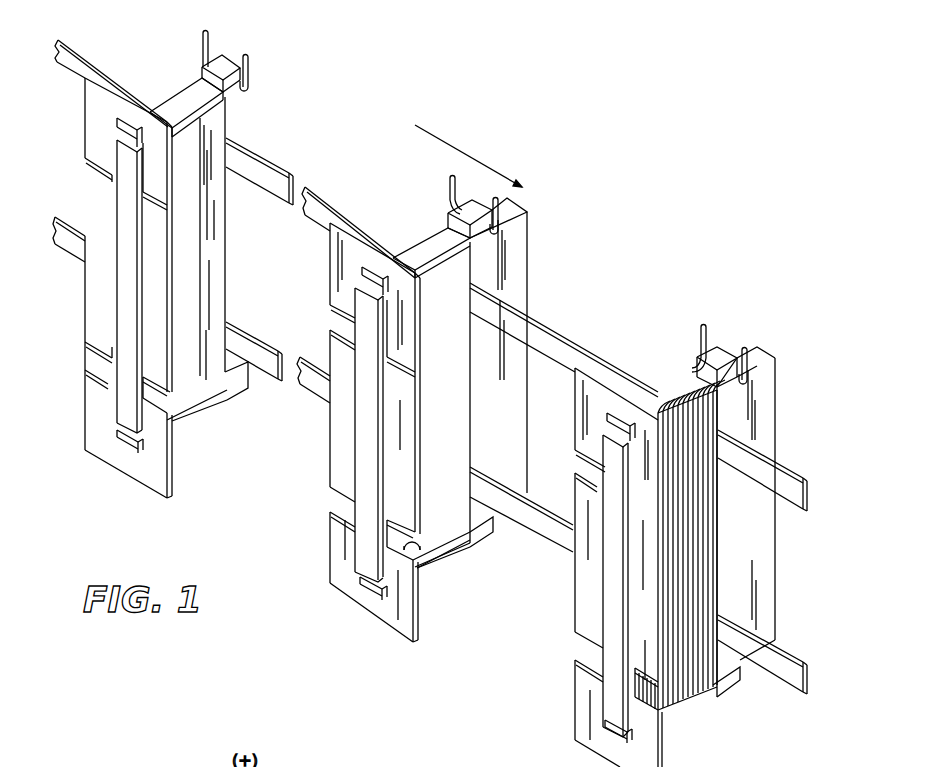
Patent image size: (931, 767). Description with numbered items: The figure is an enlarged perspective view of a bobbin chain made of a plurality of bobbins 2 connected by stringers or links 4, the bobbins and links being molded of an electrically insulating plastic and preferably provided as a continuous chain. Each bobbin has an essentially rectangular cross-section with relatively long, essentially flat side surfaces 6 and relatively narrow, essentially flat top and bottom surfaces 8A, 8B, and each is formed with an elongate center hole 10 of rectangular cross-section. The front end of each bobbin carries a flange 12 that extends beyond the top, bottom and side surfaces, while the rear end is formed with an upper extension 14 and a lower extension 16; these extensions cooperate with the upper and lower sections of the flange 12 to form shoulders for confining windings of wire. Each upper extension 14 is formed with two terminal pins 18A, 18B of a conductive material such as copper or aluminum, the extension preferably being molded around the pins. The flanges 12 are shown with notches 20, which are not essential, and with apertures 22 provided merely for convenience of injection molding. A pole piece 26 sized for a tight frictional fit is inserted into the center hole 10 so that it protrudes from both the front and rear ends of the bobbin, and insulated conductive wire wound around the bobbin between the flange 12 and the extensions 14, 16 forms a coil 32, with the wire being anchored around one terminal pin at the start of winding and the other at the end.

The bobbin 2 is at (172, 447).
The stringer or link 4 is at (280, 165).
The side surface 6 is at (210, 233).
The top surface 8A is at (183, 100).
The bottom surface 8B is at (455, 545).
The center hole 10 is at (128, 290).
The flange 12 is at (100, 418).
The upper extension 14 is at (218, 65).
The lower extension 16 is at (240, 392).
The terminal pin 18A is at (203, 33).
The terminal pin 18B is at (249, 68).
The notch 20 is at (100, 362).
The aperture 22 is at (122, 127).
The pole piece 26 is at (368, 452).
The coil 32 is at (693, 532).